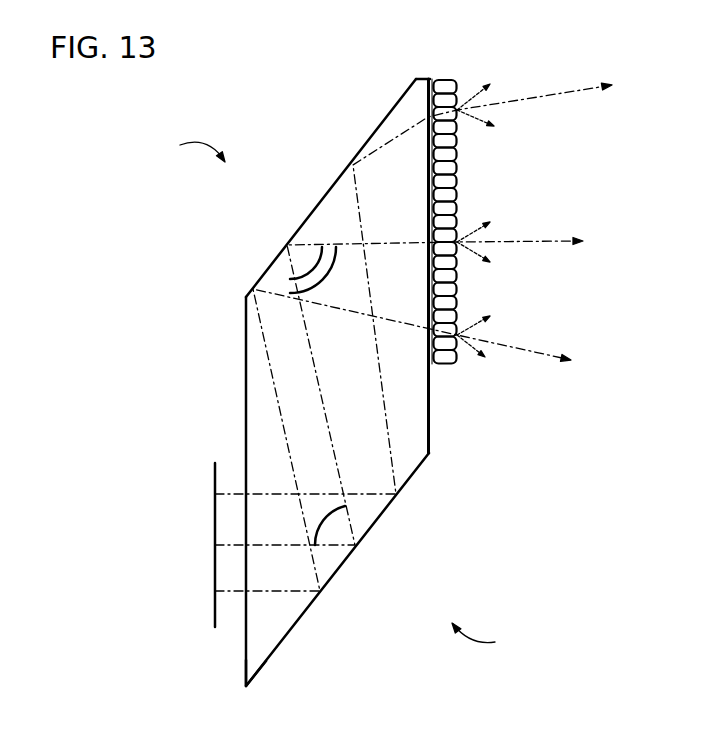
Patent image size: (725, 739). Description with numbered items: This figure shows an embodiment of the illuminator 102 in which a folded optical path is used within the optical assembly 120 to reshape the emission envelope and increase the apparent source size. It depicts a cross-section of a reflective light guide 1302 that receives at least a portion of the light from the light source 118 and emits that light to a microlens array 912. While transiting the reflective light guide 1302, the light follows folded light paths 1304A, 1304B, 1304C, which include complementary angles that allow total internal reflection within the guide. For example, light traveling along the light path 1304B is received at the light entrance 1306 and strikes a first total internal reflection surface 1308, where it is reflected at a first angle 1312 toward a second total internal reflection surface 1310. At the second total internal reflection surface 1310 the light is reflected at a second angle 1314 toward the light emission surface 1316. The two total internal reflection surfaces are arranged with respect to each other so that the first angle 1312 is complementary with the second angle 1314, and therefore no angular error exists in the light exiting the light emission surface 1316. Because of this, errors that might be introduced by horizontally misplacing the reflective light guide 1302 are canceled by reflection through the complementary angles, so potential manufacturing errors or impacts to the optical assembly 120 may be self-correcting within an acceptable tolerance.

The illuminator 102 is at (181, 150).
The light source 118 is at (215, 627).
The optical assembly 120 is at (496, 637).
The microlens array 912 is at (441, 78).
The reflective light guide 1302 is at (245, 332).
The light path 1304A is at (203, 518).
The light path 1304B is at (201, 568).
The light path 1304C is at (199, 612).
The light entrance 1306 is at (246, 688).
The first total internal reflection surface 1308 is at (395, 498).
The second total internal reflection surface 1310 is at (338, 181).
The first angle 1312 is at (328, 520).
The second angle 1314 is at (320, 261).
The light emission surface 1316 is at (433, 368).